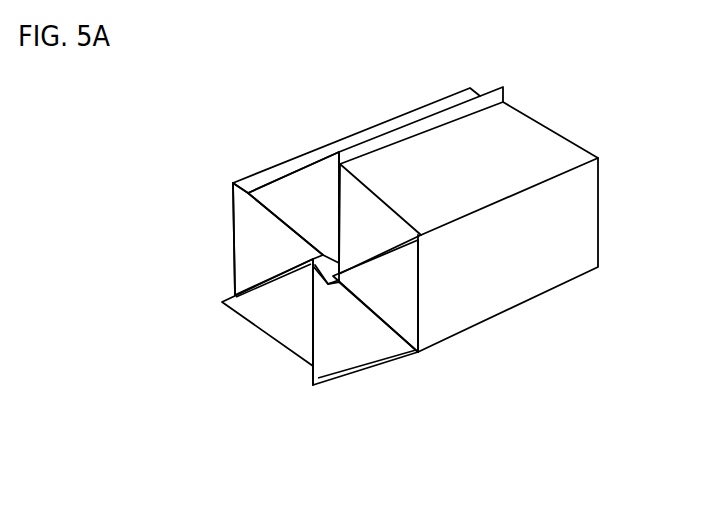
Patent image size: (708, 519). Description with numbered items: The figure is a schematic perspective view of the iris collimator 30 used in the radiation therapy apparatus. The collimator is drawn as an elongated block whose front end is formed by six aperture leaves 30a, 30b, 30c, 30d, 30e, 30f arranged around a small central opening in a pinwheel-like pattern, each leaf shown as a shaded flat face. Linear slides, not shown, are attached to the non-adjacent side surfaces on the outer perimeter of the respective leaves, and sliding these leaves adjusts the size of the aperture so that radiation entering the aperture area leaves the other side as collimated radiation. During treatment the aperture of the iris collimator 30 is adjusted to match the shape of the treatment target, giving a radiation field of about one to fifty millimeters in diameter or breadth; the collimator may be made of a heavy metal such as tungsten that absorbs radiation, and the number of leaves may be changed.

The iris collimator 30 is at (562, 97).
The aperture leaf 30a is at (300, 172).
The aperture leaf 30b is at (380, 200).
The aperture leaf 30c is at (410, 288).
The aperture leaf 30d is at (360, 362).
The aperture leaf 30e is at (265, 335).
The aperture leaf 30f is at (234, 247).